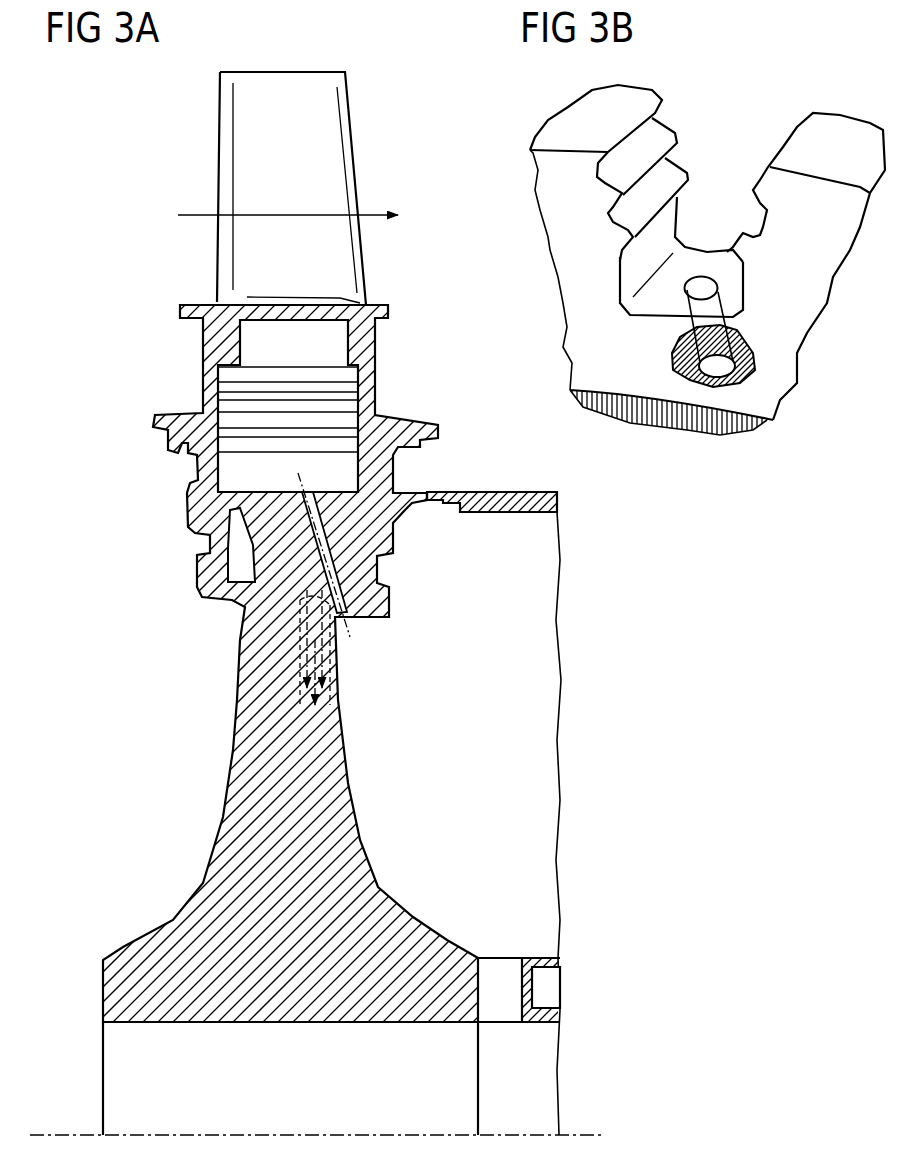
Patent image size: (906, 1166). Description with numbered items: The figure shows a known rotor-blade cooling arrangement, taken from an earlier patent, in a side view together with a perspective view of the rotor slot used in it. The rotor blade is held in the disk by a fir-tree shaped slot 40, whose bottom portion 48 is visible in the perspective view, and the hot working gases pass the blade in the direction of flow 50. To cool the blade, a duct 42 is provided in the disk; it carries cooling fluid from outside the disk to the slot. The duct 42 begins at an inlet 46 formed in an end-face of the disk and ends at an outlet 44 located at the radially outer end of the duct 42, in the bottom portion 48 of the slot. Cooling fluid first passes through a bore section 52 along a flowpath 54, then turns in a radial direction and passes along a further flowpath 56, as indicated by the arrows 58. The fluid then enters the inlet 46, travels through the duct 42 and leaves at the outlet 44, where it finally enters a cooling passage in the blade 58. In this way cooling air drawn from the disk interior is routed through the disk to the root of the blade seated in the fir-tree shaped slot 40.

In FIG. 3B, the fir-tree shaped slot 40 is at (753, 147).
In FIG. 3A, the duct 42 is at (380, 572).
In FIG. 3B, the duct 42 is at (720, 303).
In FIG. 3A, the outlet 44 is at (297, 475).
In FIG. 3B, the outlet 44 is at (702, 285).
In FIG. 3A, the inlet 46 is at (358, 618).
In FIG. 3B, the inlet 46 is at (708, 365).
In FIG. 3B, the bottom portion of the slot 48 is at (690, 250).
In FIG. 3A, the direction of flow of the hot working gases 50 is at (197, 213).
In FIG. 3A, the bore section 52 is at (104, 1050).
In FIG. 3A, the flowpath 54 is at (318, 1117).
In FIG. 3A, the further flowpath 56 is at (470, 737).
In FIG. 3A, the arrows 58 is at (303, 175).